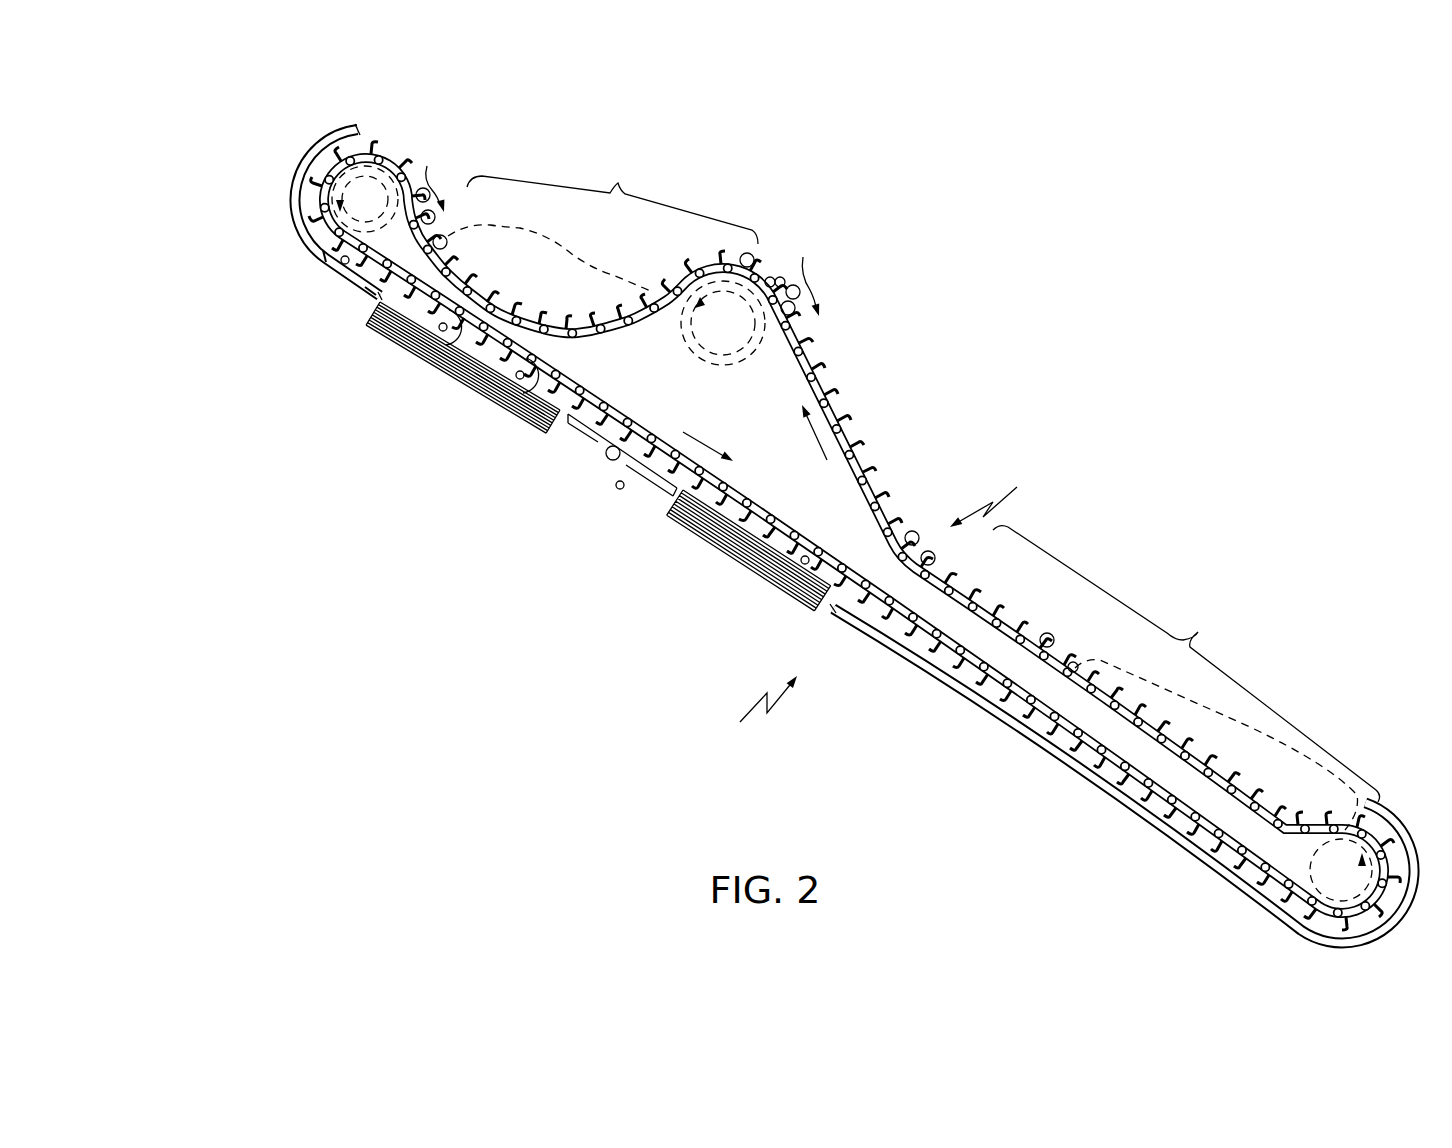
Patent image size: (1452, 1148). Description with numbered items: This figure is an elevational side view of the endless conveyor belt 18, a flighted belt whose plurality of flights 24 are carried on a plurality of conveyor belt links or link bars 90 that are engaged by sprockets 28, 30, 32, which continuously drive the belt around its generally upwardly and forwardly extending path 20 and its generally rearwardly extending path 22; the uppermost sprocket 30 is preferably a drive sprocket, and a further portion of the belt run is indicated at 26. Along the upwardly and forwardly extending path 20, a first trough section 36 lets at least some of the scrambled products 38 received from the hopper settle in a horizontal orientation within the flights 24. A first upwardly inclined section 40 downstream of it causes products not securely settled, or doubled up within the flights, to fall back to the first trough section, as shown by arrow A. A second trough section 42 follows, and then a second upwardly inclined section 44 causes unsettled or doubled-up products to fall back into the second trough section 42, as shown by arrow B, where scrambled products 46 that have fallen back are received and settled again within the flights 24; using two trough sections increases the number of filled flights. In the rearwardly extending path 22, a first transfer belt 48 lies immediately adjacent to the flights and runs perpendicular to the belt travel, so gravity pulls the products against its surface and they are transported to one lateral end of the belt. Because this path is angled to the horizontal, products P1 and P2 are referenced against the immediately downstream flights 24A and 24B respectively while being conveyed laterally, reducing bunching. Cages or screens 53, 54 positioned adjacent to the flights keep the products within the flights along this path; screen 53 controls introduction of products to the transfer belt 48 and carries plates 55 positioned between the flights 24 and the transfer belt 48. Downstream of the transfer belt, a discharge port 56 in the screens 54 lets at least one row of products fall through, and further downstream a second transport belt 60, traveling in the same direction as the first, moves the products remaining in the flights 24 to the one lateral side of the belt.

The endless conveyor belt 18 is at (873, 490).
The generally upwardly and forwardly extending path 20 is at (1000, 492).
The generally rearwardly extending path 22 is at (753, 716).
The flights 24 is at (815, 366).
The flight 24A is at (455, 357).
The flight 24B is at (530, 417).
The carrying run of conveyor belt 26 is at (787, 512).
The sprocket 28 is at (1300, 856).
The uppermost sprocket 30 is at (375, 155).
The sprocket 32 is at (683, 340).
The first trough section 36 is at (1186, 664).
The scrambled products 38 is at (1140, 680).
The first upwardly inclined section 40 is at (827, 233).
The second trough section 42 is at (612, 199).
The second upwardly inclined section 44 is at (388, 95).
The scrambled products 46 is at (520, 226).
The first transfer belt 48 is at (395, 333).
The screen 53 is at (325, 268).
The cages or screens 54 is at (300, 190).
The plates 55 is at (376, 297).
The discharge port 56 is at (634, 492).
The second transport belt 60 is at (730, 565).
The link bars 90 is at (610, 405).
The arrow A is at (807, 269).
The arrow B is at (429, 172).
The product P1 is at (417, 352).
The product P2 is at (503, 407).